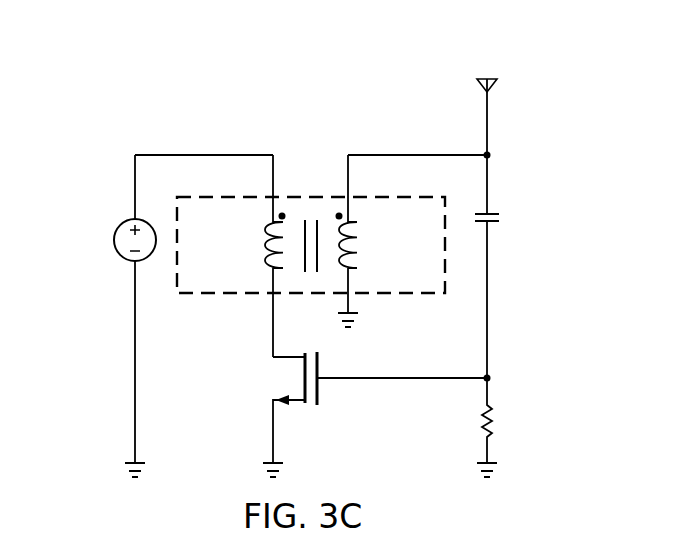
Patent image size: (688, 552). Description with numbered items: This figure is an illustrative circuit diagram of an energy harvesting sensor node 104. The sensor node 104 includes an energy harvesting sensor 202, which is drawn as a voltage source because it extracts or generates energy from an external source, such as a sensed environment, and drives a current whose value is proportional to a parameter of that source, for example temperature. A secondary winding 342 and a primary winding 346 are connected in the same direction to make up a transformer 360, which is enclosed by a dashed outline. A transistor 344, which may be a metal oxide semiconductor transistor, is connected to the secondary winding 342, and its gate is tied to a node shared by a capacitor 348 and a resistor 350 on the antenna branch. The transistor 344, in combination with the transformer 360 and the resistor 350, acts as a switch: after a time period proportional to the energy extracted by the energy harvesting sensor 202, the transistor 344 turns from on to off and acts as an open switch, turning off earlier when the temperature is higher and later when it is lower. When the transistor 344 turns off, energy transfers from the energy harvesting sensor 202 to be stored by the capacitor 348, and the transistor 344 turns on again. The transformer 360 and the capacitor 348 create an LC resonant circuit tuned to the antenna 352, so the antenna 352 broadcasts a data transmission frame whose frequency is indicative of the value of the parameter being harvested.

The energy harvesting sensor node 104 is at (239, 107).
The energy harvesting sensor 202 is at (113, 240).
The secondary winding 342 is at (265, 247).
The transistor 344 is at (318, 390).
The primary winding 346 is at (362, 240).
The capacitor 348 is at (500, 218).
The resistor 350 is at (493, 422).
The antenna 352 is at (490, 78).
The transformer 360 is at (254, 299).